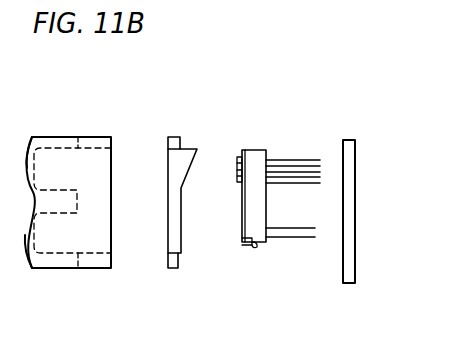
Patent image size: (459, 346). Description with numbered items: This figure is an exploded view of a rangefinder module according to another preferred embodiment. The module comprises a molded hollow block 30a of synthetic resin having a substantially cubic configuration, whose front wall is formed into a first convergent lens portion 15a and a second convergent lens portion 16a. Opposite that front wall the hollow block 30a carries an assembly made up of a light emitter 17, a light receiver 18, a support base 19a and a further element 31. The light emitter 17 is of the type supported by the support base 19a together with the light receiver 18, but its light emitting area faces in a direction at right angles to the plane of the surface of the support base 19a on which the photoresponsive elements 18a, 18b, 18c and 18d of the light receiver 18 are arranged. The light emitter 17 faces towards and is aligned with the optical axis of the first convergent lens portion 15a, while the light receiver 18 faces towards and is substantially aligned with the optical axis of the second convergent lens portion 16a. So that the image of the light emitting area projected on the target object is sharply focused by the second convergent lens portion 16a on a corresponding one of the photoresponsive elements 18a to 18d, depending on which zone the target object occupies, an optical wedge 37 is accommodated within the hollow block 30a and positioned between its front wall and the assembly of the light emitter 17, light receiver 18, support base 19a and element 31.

The first convergent lens portion 15a is at (25, 235).
The second convergent lens portion 16a is at (27, 168).
The molded hollow block 30a is at (48, 273).
The optical wedge 37 is at (170, 210).
The light emitter 17 is at (262, 171).
The light receiver 18 is at (240, 149).
The photoresponsive element 18a is at (241, 212).
The photoresponsive element 18b is at (238, 181).
The photoresponsive element 18c is at (238, 160).
The photoresponsive element 18d is at (237, 158).
The support base 19a is at (264, 152).
The element of the emitter/receiver assembly 31 is at (351, 182).